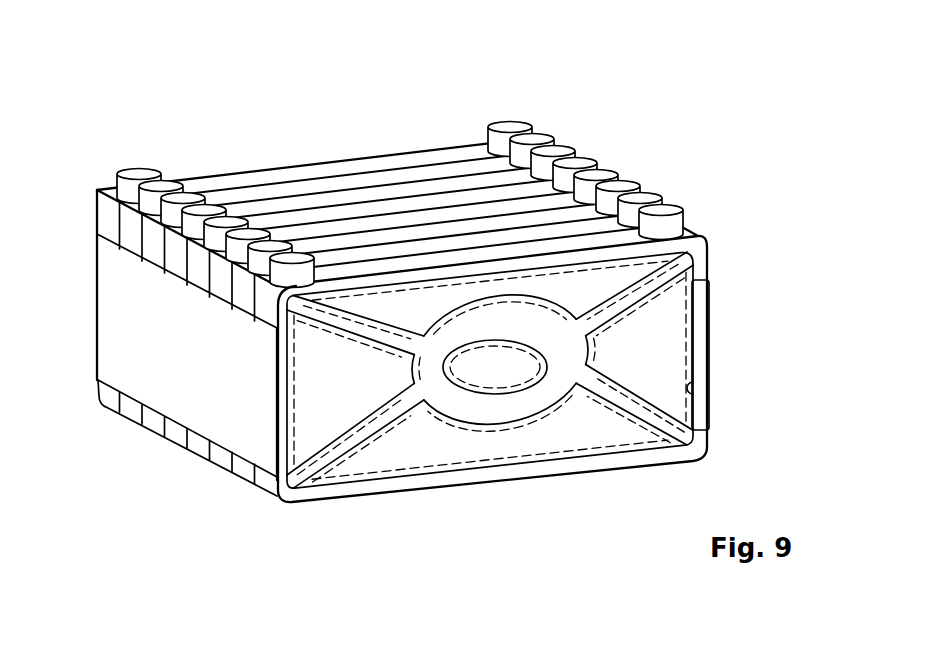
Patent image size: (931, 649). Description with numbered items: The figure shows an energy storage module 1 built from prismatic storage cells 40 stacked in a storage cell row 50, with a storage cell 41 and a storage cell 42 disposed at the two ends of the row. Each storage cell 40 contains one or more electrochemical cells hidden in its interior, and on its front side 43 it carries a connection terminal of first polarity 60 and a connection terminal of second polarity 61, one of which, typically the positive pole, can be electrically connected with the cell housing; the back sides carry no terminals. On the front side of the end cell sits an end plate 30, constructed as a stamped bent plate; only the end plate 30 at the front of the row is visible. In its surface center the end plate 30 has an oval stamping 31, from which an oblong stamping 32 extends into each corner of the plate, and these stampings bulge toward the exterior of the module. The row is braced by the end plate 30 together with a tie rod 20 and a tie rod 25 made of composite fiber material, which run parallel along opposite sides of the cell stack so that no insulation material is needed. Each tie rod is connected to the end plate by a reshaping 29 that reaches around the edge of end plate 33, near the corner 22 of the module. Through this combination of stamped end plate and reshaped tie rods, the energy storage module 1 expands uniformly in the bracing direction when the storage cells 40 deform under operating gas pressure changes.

The energy storage module 1 is at (340, 90).
The tie rod 20 is at (94, 333).
The corner 22 is at (308, 420).
The tie rod 25 is at (712, 358).
The reshaping 29 is at (694, 391).
The end plate 30 is at (473, 449).
The oval stamping 31 is at (511, 395).
The oblong stamping 32 is at (633, 289).
The edge of end plate 33 is at (393, 485).
The storage cells 40 is at (363, 193).
The storage cell at the end 41 is at (604, 238).
The storage cell at the end 42 is at (452, 155).
The front side 43 is at (273, 210).
The storage cell row 50 is at (300, 157).
The connection terminal of first polarity 60 is at (170, 178).
The connection terminal of second polarity 61 is at (670, 208).